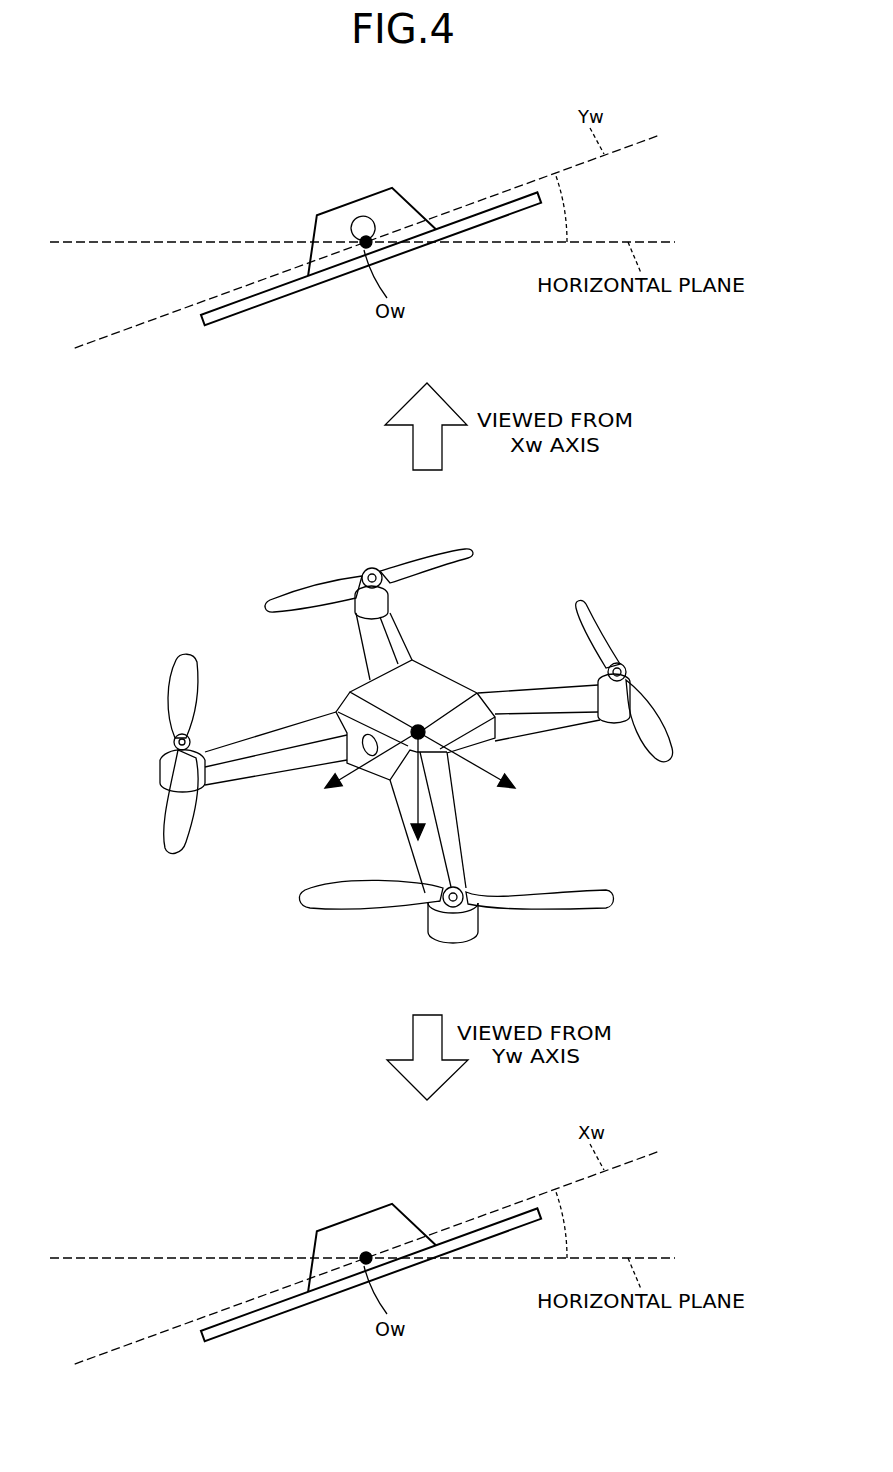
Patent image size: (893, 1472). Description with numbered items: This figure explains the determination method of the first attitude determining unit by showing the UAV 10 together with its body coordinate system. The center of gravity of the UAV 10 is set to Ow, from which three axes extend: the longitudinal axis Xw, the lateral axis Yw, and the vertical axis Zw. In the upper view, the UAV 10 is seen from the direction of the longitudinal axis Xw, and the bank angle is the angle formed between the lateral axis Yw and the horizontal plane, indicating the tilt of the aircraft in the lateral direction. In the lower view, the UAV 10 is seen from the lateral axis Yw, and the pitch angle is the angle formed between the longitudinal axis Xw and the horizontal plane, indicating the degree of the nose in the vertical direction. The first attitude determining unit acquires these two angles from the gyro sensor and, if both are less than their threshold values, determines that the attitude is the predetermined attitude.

The UAV 10 is at (424, 746).
The center of gravity Ow is at (423, 727).
The longitudinal axis Xw is at (354, 770).
The lateral axis Yw is at (470, 773).
The vertical axis Zw is at (400, 790).